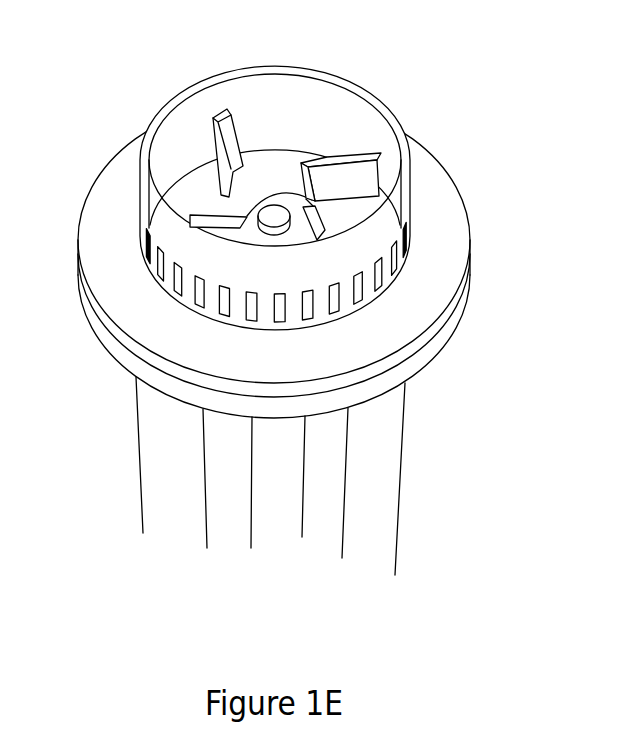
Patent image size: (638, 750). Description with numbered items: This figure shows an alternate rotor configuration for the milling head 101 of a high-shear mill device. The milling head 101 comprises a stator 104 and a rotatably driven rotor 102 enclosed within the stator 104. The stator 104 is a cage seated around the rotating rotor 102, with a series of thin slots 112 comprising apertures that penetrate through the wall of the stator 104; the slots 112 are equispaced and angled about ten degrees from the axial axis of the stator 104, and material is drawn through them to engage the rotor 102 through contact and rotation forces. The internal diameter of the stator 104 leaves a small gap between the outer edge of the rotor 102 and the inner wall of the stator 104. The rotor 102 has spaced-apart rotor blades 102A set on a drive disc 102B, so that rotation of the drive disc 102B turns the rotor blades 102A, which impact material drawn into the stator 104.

The milling head 101 is at (431, 206).
The rotor 102 is at (326, 203).
The rotor blade 102A is at (333, 175).
The drive disc 102B is at (348, 195).
The stator 104 is at (347, 292).
The slot 112 is at (160, 289).